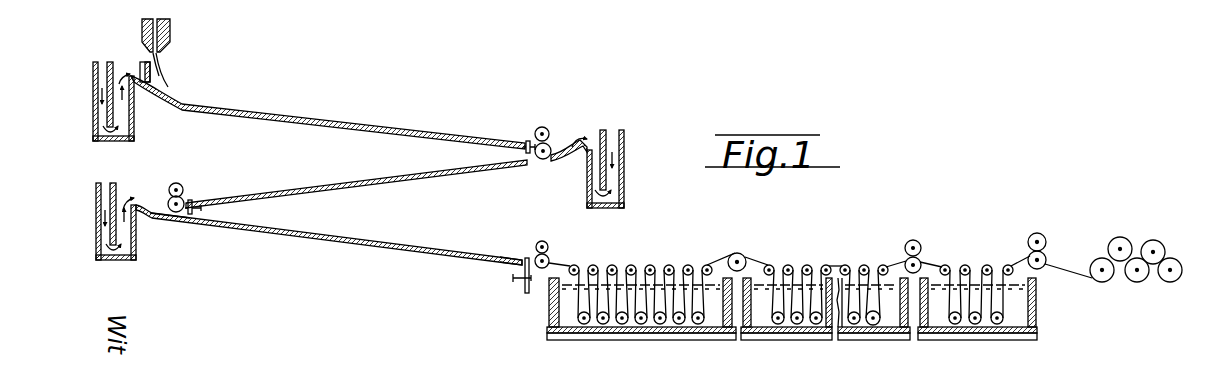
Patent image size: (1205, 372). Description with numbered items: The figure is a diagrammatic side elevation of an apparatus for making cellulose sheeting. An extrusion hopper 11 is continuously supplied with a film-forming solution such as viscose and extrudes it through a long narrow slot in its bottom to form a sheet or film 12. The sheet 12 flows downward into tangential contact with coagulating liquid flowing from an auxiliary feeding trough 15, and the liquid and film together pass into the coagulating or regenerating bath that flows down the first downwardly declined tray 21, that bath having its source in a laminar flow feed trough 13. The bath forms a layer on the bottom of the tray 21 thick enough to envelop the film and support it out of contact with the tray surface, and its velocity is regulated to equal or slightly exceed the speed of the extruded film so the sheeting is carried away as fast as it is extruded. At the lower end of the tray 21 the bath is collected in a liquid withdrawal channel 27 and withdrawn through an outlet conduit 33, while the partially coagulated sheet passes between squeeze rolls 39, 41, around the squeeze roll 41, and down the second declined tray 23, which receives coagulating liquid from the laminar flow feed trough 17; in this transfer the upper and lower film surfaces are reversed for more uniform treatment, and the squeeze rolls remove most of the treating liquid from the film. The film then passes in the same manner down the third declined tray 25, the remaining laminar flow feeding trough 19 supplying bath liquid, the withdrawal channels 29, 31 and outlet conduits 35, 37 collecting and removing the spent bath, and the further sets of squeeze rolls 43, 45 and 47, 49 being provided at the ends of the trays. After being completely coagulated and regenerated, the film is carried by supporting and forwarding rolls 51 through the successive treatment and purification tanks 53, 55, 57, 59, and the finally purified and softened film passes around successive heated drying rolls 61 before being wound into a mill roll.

The extrusion hopper 11 is at (165, 50).
The sheet or film 12 is at (178, 98).
The laminar flow bath feeding trough 13 is at (93, 100).
The auxiliary feeding trough 15 is at (142, 67).
The laminar flow bath feeding trough 17 is at (624, 143).
The laminar flow bath feeding trough 19 is at (96, 234).
The downwardly declined tray 21 is at (343, 128).
The downwardly declined tray 23 is at (327, 190).
The downwardly declined tray 25 is at (322, 244).
The liquid withdrawal channel 27 is at (527, 143).
The liquid withdrawal channel 29 is at (191, 205).
The liquid withdrawal channel 31 is at (533, 250).
The outlet conduit 33 is at (536, 162).
The outlet conduit 35 is at (180, 218).
The outlet conduit 37 is at (512, 268).
The squeeze roll 39 is at (544, 128).
The squeeze roll 41 is at (549, 144).
The squeeze roll 43 is at (173, 184).
The squeeze roll 45 is at (174, 211).
The squeeze roll 47 is at (552, 229).
The squeeze roll 49 is at (537, 268).
The supporting and forwarding rolls 51 is at (615, 266).
The treatment tank 53 is at (647, 335).
The treatment tank 55 is at (786, 334).
The treatment tank 57 is at (875, 334).
The treatment tank 59 is at (962, 334).
The drying rolls 61 is at (1133, 281).